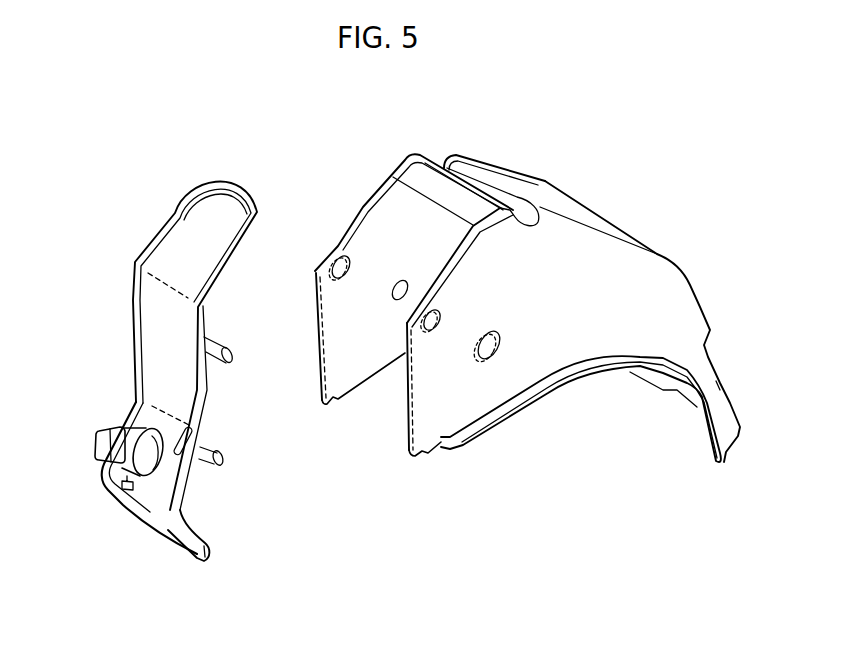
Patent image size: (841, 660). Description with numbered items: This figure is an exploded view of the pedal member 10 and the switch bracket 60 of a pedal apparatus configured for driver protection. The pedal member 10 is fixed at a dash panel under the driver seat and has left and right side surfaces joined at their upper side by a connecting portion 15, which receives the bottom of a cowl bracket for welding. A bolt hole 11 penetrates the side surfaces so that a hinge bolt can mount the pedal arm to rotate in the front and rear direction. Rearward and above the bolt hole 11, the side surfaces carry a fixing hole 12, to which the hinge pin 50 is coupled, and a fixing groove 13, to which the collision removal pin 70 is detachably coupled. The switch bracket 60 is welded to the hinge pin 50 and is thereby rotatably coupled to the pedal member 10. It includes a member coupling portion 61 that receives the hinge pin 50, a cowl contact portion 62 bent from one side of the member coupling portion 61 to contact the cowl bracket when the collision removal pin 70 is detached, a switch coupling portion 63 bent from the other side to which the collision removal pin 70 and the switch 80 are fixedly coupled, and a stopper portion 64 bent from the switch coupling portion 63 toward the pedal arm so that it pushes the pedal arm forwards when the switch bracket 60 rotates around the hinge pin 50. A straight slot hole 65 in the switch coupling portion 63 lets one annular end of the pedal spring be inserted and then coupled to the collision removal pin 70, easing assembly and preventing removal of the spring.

The pedal member 10 is at (586, 242).
The bolt hole 11 is at (502, 343).
The fixing hole 12 is at (343, 260).
The fixing groove 13 is at (330, 400).
The connecting portion 15 is at (412, 168).
The hinge pin 50 is at (224, 358).
The switch bracket 60 is at (152, 230).
The member coupling portion 61 is at (165, 350).
The cowl contact portion 62 is at (192, 220).
The switch coupling portion 63 is at (153, 418).
The stopper portion 64 is at (196, 552).
The slot hole 65 is at (160, 488).
The collision removal pin 70 is at (222, 457).
The switch 80 is at (96, 447).